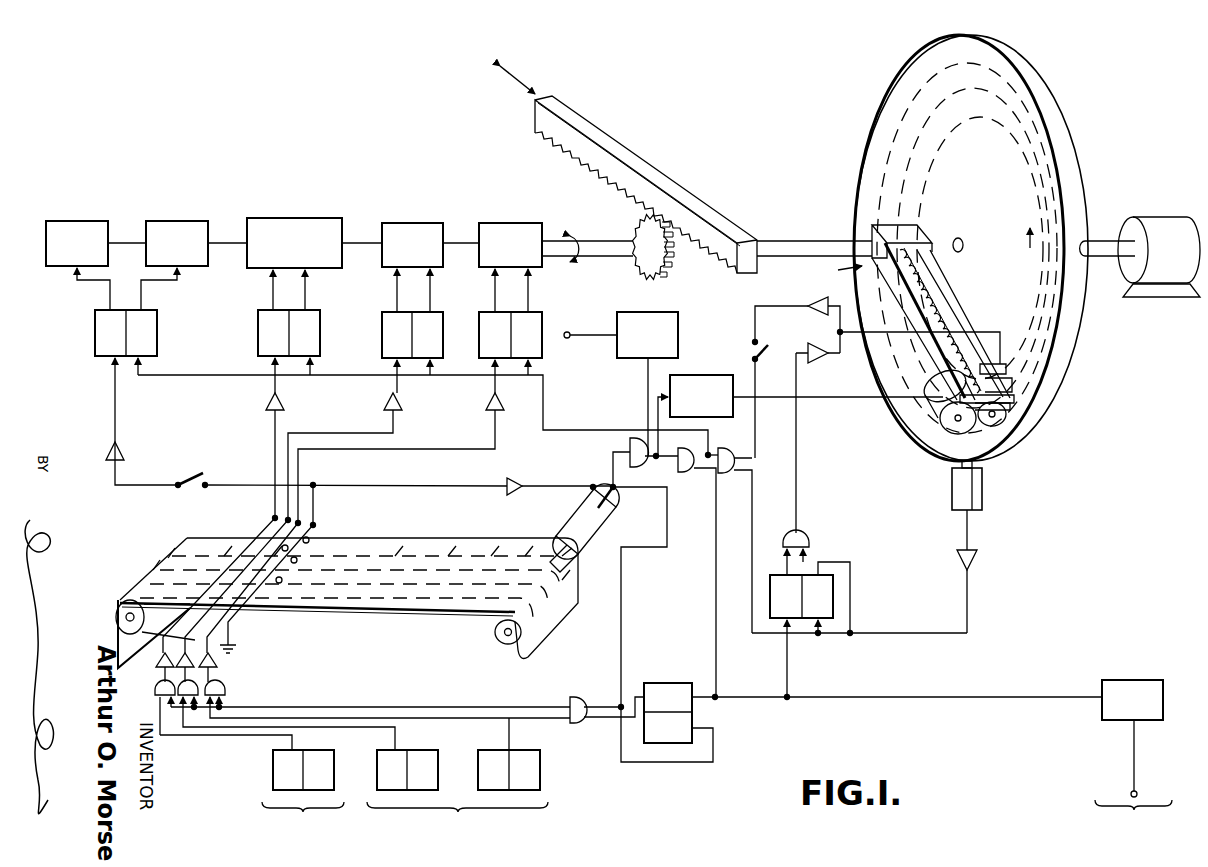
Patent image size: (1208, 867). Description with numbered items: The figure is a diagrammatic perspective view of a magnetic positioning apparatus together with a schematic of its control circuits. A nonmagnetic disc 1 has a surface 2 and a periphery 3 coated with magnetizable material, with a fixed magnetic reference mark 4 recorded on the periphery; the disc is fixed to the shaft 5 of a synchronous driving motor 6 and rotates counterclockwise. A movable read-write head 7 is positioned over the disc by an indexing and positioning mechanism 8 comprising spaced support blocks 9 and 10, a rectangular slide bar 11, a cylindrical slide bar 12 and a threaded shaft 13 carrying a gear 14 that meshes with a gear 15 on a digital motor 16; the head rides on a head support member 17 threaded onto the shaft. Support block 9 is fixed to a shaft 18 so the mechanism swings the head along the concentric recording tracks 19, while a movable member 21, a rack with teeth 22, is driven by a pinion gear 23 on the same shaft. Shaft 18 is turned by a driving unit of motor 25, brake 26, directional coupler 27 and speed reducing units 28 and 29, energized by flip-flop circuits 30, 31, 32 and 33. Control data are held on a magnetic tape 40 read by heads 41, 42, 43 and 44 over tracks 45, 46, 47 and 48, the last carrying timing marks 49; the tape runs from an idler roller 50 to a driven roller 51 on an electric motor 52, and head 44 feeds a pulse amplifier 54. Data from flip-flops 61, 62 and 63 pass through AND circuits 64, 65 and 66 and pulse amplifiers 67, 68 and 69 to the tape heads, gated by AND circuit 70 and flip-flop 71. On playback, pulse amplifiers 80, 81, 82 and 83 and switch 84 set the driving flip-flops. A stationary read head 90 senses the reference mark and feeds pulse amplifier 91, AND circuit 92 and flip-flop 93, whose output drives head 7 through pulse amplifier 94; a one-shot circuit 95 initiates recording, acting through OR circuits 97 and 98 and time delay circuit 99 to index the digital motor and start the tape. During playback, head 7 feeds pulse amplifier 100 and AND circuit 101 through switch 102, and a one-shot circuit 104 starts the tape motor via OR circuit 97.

The disc 1 is at (1050, 88).
The surface 2 is at (880, 128).
The periphery 3 is at (1064, 140).
The fixed magnetic reference mark 4 is at (1014, 398).
The shaft 5 is at (1112, 238).
The synchronous driving motor 6 is at (1172, 216).
The movable magnetic read-write head 7 is at (1006, 376).
The indexing and positioning mechanism 8 is at (837, 270).
The support block 9 is at (914, 225).
The support block 10 is at (1012, 406).
The rectangular slide bar 11 is at (896, 292).
The cylindrical slide bar 12 is at (944, 304).
The threaded shaft 13 is at (918, 278).
The gear 14 is at (1000, 426).
The gear 15 is at (945, 430).
The digital motor 16 is at (937, 405).
The head support member 17 is at (993, 364).
The shaft 18 is at (797, 240).
The concentric recording tracks 19 is at (1024, 163).
The movable member 21 is at (612, 148).
The teeth 22 is at (592, 163).
The pinion gear 23 is at (636, 226).
The motor 25 is at (68, 221).
The electromechanical brake 26 is at (168, 221).
The electromechanical directional coupler 27 is at (288, 218).
The electromechanical variable speed reducing unit 28 is at (398, 223).
The electromechanical variable speed reducing unit 29 is at (496, 223).
The flip-flop multivibrator circuit 30 is at (95, 348).
The flip-flop multivibrator circuit 31 is at (258, 340).
The flip-flop multivibrator circuit 32 is at (382, 342).
The flip-flop multivibrator circuit 33 is at (479, 354).
The magnetic tape 40 is at (396, 628).
The magnetic read-write head 41 is at (272, 590).
The magnetic read-write head 42 is at (290, 583).
The magnetic read-write head 43 is at (300, 565).
The magnetic read-write head 44 is at (312, 540).
The recording track 45 is at (156, 578).
The recording track 46 is at (170, 560).
The recording track 47 is at (195, 548).
The recording track 48 is at (246, 535).
The magnetic timing marks 49 is at (436, 548).
The idler roller 50 is at (118, 610).
The driven roller 51 is at (496, 634).
The electric motor 52 is at (580, 546).
The pulse amplifier 54 is at (511, 479).
The flip-flop multivibrator circuit 61 is at (273, 776).
The flip-flop multivibrator circuit 62 is at (377, 776).
The flip-flop multivibrator circuit 63 is at (478, 778).
The AND circuit 64 is at (211, 715).
The AND circuit 65 is at (200, 684).
The AND circuit 66 is at (222, 690).
The pulse amplifier 67 is at (157, 662).
The pulse amplifier 68 is at (178, 670).
The pulse amplifier 69 is at (218, 661).
The AND circuit 70 is at (570, 697).
The flip-flop circuit 71 is at (660, 683).
The pulse amplifier 80 is at (106, 458).
The pulse amplifier 81 is at (266, 403).
The pulse amplifier 82 is at (384, 403).
The pulse amplifier 83 is at (486, 403).
The switch 84 is at (190, 474).
The stationary read head 90 is at (983, 488).
The pulse amplifier 91 is at (977, 562).
The AND circuit 92 is at (804, 535).
The flip-flop multivibrator circuit 93 is at (770, 592).
The pulse amplifier 94 is at (815, 362).
The one-shot multivibrator circuit 95 is at (1116, 680).
The OR circuit 97 is at (630, 444).
The OR circuit 98 is at (686, 474).
The time delay circuit 99 is at (694, 375).
The pulse amplifier 100 is at (822, 300).
The AND circuit 101 is at (738, 440).
The switch 102 is at (762, 348).
The one-shot multivibrator circuit 104 is at (645, 312).